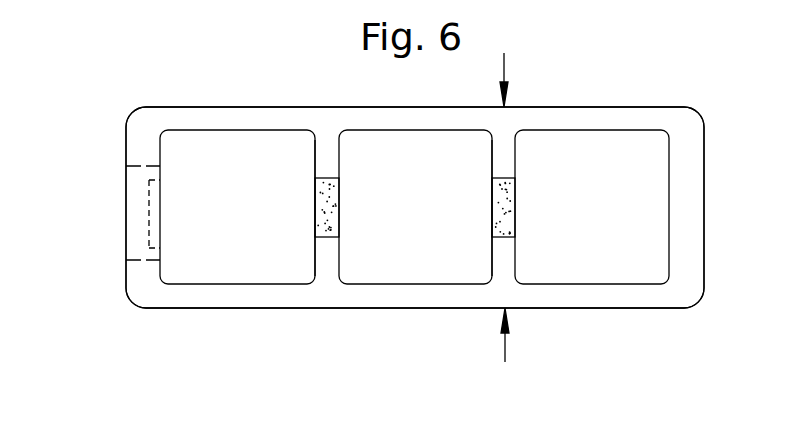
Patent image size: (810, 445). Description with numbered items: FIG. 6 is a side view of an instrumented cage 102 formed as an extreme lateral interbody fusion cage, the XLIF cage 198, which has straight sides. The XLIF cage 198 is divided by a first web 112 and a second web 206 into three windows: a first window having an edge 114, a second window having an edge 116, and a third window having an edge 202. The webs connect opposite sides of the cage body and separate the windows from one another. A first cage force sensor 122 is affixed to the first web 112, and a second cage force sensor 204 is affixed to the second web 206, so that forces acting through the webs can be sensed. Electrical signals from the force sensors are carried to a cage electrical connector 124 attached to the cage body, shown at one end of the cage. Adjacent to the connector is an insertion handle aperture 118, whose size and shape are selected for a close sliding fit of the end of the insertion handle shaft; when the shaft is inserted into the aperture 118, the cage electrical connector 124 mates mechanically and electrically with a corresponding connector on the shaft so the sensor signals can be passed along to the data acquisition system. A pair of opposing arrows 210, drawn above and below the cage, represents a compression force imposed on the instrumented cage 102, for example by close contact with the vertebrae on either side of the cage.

The instrumented cage 102 is at (133, 70).
The XLIF cage 198 is at (657, 107).
The first window edge 114 is at (257, 284).
The second window edge 116 is at (432, 284).
The third window edge 202 is at (668, 261).
The first web 112 is at (315, 260).
The second web 206 is at (492, 258).
The first cage force sensor 122 is at (326, 178).
The second cage force sensor 204 is at (503, 178).
The insertion handle aperture 118 is at (137, 165).
The cage electrical connector 124 is at (148, 235).
The opposing arrows 210 is at (505, 345).